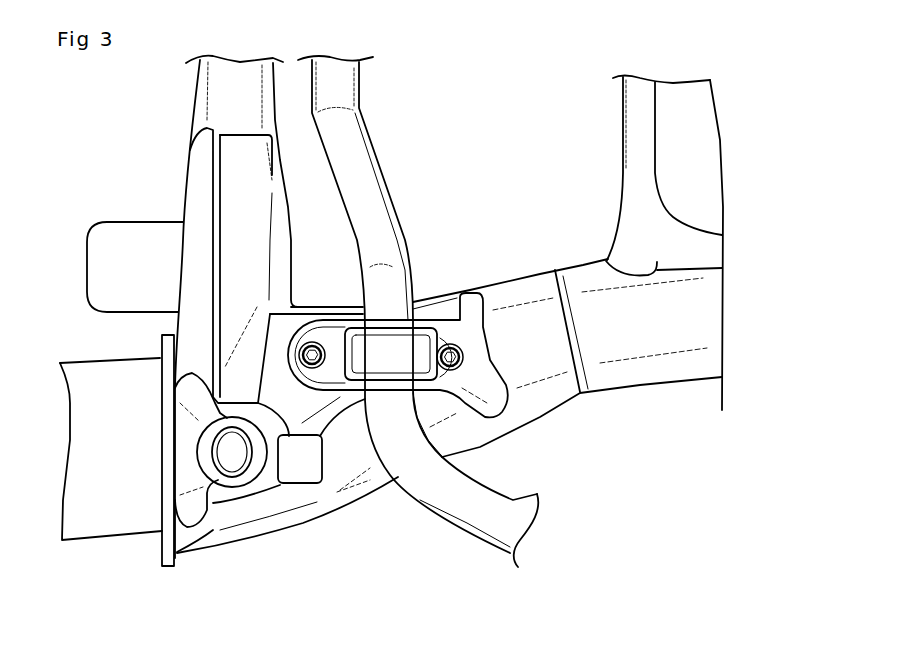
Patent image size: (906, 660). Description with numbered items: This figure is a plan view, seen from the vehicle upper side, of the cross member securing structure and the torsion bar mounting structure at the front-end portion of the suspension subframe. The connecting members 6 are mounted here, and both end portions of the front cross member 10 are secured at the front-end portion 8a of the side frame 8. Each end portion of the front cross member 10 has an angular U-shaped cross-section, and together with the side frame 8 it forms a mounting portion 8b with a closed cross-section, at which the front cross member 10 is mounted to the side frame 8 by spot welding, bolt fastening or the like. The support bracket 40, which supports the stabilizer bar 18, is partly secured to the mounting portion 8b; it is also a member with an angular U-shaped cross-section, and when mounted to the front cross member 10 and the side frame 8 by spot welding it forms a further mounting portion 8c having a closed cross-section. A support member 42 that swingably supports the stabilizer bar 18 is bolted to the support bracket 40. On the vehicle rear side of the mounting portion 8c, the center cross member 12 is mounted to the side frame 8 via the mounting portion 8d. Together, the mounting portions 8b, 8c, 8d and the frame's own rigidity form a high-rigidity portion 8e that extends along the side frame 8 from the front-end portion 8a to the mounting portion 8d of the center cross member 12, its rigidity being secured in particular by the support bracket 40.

The connecting member 6 is at (79, 363).
The side frame 8 is at (515, 278).
The front-end portion of the side frame 8a is at (285, 523).
The mounting portion 8b is at (193, 335).
The mounting portion 8c is at (313, 313).
The mounting portion 8d is at (650, 257).
The high-rigidity portion 8e is at (360, 532).
The front cross member 10 is at (197, 108).
The center cross member 12 is at (625, 168).
The stabilizer bar 18 is at (362, 78).
The support bracket 40 is at (460, 303).
The support member 42 is at (415, 345).